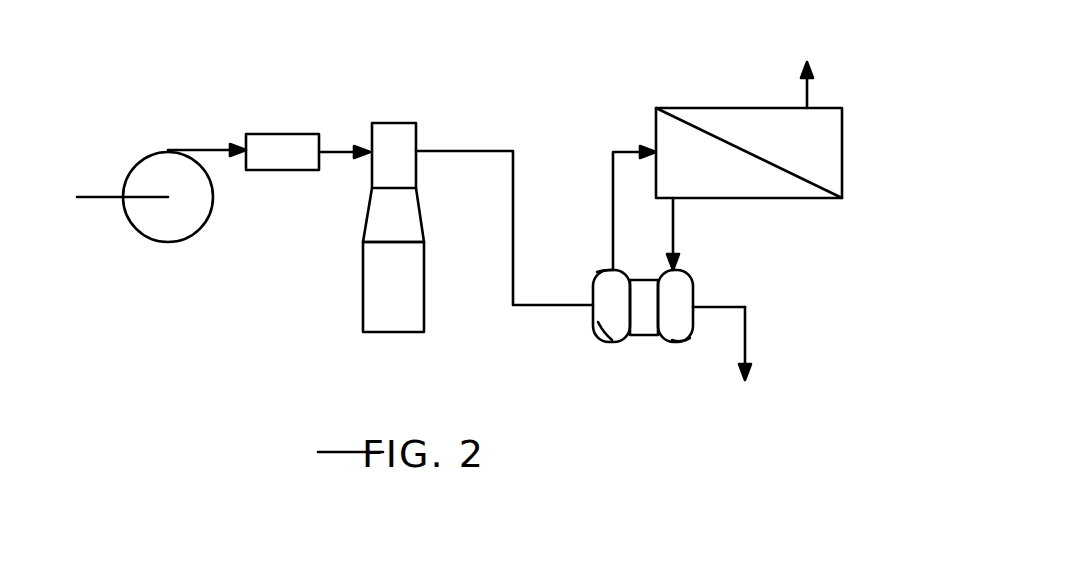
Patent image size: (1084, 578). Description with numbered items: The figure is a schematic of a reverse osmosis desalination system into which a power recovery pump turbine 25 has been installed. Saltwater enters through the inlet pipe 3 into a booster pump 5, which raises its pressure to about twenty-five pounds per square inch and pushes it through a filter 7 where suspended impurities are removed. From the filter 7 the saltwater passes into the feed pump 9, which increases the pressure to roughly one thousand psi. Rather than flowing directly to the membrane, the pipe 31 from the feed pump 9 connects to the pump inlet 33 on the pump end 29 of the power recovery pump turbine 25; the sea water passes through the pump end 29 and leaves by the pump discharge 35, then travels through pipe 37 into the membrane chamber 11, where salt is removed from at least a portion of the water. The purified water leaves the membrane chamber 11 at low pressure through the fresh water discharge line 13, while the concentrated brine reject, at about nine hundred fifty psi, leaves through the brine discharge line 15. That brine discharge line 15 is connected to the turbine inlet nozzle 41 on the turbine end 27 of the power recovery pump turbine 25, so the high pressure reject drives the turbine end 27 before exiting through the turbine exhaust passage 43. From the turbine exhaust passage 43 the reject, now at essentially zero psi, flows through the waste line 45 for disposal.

The inlet pipe 3 is at (103, 198).
The booster pump 5 is at (152, 153).
The filter 7 is at (272, 133).
The feed pump 9 is at (385, 123).
The membrane chamber 11 is at (677, 107).
The fresh water discharge line 13 is at (807, 98).
The brine discharge line 15 is at (673, 225).
The power recovery pump turbine 25 is at (645, 333).
The turbine end 27 is at (683, 343).
The pump end 29 is at (608, 328).
The pipe 31 is at (512, 288).
The pump inlet 33 is at (592, 310).
The pump discharge 35 is at (598, 268).
The pipe 37 is at (611, 168).
The turbine inlet nozzle 41 is at (678, 270).
The turbine exhaust passage 43 is at (693, 303).
The waste line 45 is at (747, 317).